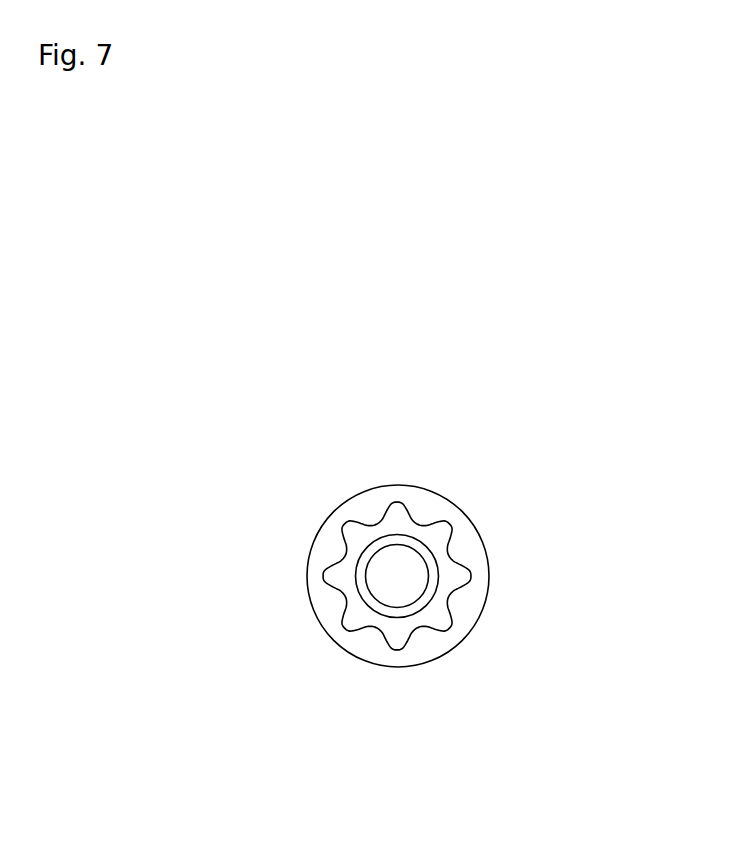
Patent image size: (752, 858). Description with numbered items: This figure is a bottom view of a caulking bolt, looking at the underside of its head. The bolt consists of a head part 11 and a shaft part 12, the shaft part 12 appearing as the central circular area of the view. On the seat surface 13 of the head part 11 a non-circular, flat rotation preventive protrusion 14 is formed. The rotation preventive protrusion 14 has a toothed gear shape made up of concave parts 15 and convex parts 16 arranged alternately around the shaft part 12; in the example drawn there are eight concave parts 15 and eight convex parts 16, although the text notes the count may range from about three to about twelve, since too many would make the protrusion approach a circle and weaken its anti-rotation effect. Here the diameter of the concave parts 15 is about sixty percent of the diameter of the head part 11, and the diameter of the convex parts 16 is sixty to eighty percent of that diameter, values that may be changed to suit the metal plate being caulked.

The head part 11 is at (438, 495).
The shaft part 12 is at (408, 582).
The seat surface 13 is at (447, 517).
The rotation preventive protrusion 14 is at (457, 575).
The concave parts 15 is at (375, 625).
The convex parts 16 is at (397, 650).